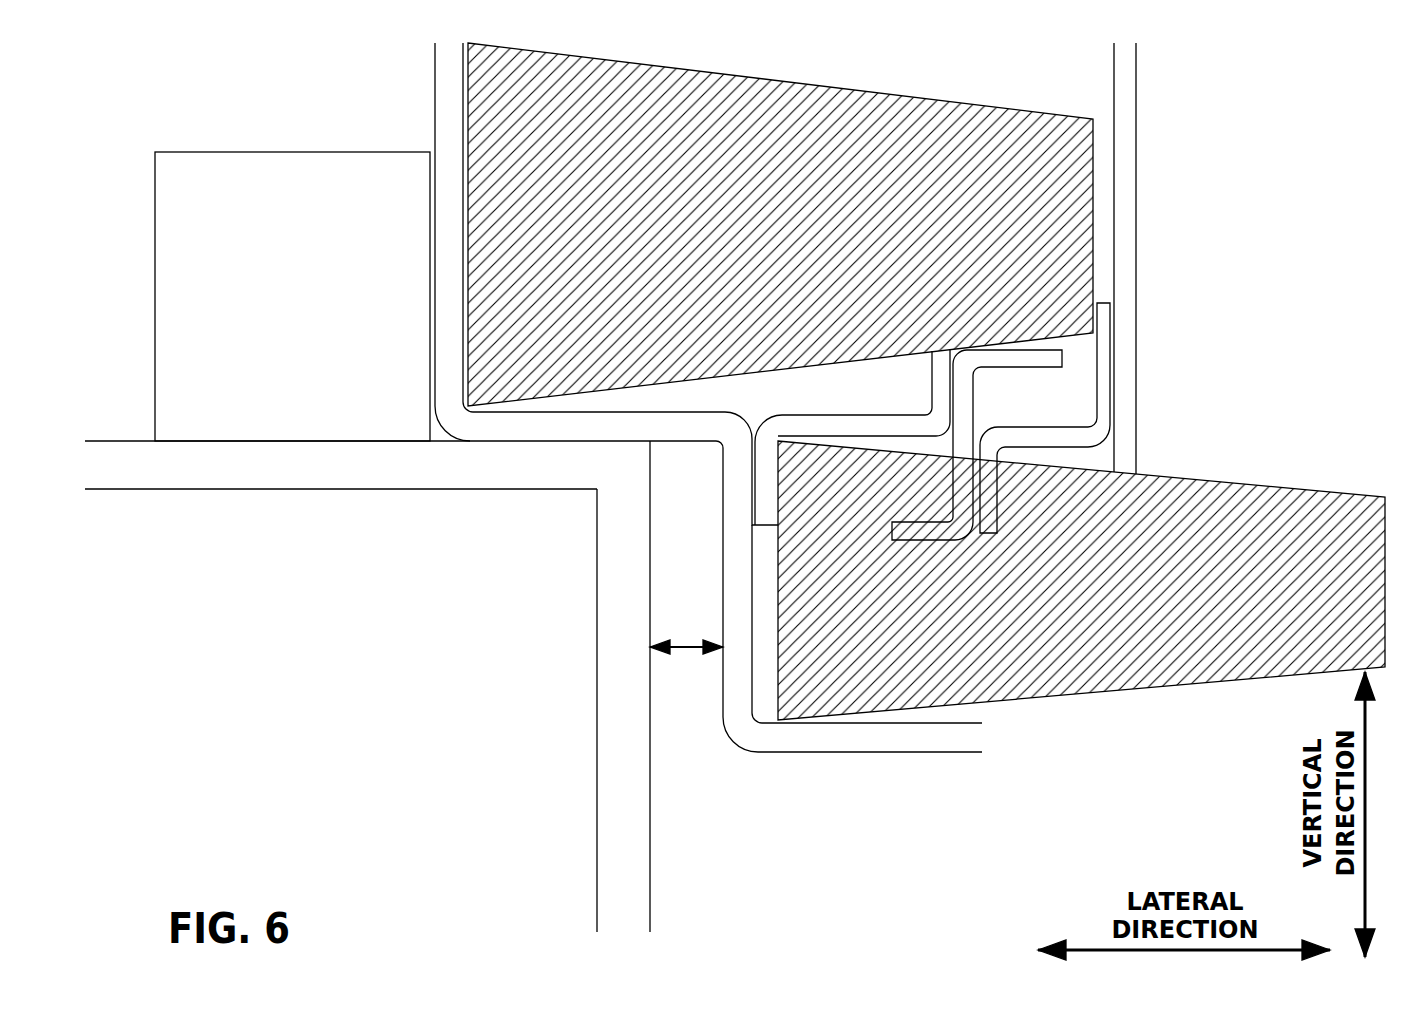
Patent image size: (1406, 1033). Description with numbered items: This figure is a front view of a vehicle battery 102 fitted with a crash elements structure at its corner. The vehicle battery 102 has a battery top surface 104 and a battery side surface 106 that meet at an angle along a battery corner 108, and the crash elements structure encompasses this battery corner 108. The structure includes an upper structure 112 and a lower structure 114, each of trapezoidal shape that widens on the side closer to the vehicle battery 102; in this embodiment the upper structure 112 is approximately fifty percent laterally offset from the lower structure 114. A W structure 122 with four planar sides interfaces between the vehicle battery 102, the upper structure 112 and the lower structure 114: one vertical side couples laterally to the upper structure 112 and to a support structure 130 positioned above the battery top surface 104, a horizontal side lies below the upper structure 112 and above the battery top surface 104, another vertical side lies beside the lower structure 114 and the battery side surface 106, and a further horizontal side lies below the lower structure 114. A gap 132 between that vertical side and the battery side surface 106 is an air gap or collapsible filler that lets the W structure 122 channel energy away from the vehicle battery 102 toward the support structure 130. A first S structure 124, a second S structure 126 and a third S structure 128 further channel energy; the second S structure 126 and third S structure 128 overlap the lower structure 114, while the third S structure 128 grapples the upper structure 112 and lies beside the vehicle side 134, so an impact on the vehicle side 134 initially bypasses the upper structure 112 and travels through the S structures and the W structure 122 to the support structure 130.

The vehicle battery 102 is at (274, 691).
The battery top surface 104 is at (274, 480).
The battery side surface 106 is at (602, 693).
The battery corner 108 is at (594, 489).
The upper structure 112 is at (787, 128).
The lower structure 114 is at (1022, 675).
The W structure 122 is at (807, 740).
The first S structure 124 is at (847, 425).
The second S structure 126 is at (912, 540).
The third S structure 128 is at (1103, 387).
The support structure 130 is at (274, 303).
The gap 132 is at (687, 652).
The vehicle side 134 is at (1122, 267).